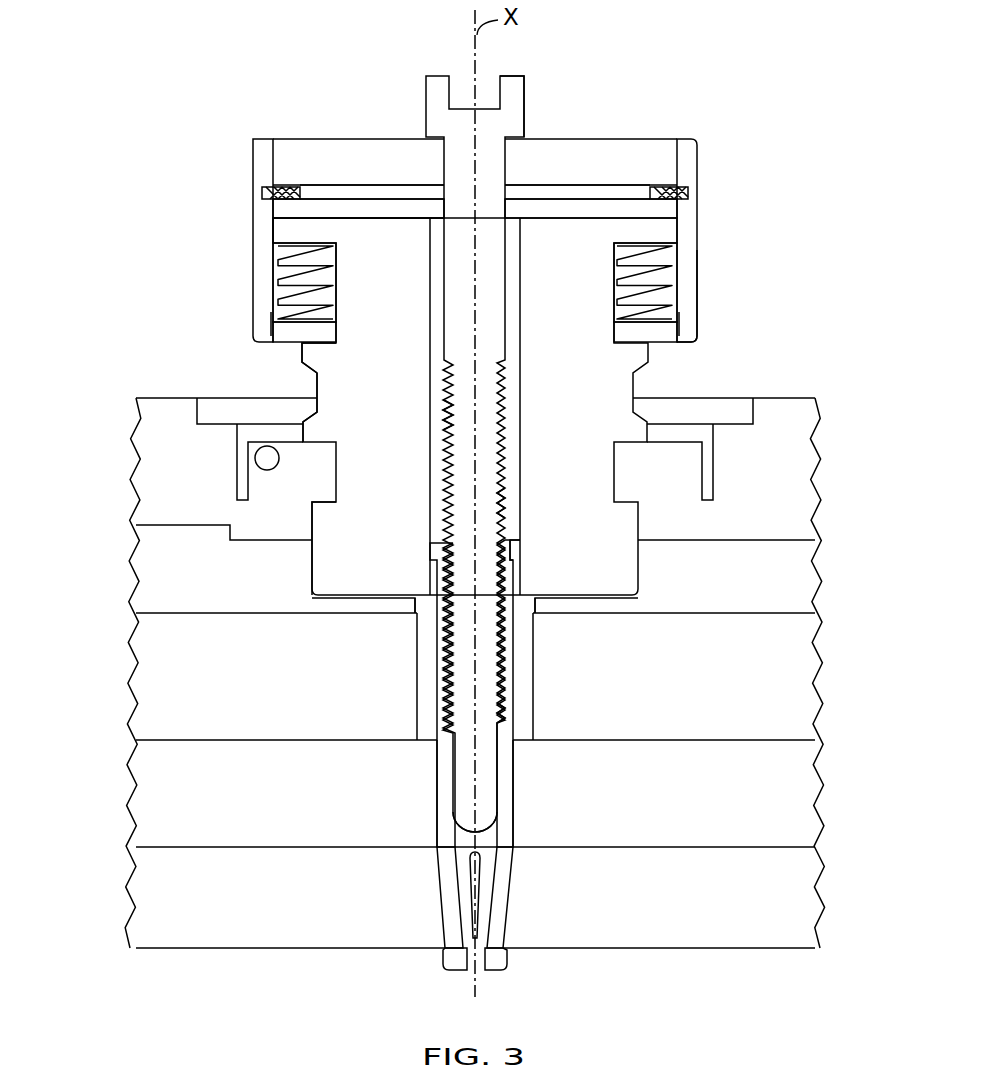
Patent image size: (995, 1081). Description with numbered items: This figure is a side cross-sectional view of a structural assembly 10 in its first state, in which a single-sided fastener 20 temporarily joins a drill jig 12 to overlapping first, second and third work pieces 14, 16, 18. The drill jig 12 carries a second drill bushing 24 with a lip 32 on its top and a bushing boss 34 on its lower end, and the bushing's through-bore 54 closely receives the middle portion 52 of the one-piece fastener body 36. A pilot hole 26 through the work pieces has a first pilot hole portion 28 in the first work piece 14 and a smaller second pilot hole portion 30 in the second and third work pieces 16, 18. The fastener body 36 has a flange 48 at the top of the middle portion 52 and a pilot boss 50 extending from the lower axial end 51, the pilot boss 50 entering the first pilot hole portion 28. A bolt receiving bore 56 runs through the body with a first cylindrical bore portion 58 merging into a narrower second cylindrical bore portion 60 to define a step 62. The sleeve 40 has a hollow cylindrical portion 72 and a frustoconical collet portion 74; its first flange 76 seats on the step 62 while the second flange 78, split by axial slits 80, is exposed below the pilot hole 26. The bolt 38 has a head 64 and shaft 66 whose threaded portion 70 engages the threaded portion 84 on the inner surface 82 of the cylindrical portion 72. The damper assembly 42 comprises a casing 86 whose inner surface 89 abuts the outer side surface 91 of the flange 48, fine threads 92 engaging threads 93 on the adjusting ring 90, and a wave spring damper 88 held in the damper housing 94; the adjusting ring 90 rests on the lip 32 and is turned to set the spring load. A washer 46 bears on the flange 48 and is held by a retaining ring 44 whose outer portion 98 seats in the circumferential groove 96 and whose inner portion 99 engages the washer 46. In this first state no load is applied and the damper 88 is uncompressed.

The structural assembly 10 is at (130, 65).
The drill jig 12 is at (766, 445).
The first work piece 14 is at (766, 680).
The second work piece 16 is at (766, 790).
The third work piece 18 is at (766, 890).
The single-sided fastener 20 is at (254, 140).
The second drill bushing 24 is at (640, 365).
The pilot hole 26 is at (420, 675).
The first pilot hole portion 28 is at (530, 660).
The second pilot hole portion 30 is at (437, 918).
The lip 32 is at (303, 348).
The bushing boss 34 is at (640, 565).
The fastener body 36 is at (360, 393).
The bolt 38 is at (440, 95).
The sleeve 40 is at (435, 823).
The damper assembly 42 is at (683, 252).
The retaining ring 44 is at (697, 197).
The washer 46 is at (340, 210).
The flange 48 is at (278, 238).
The pilot boss 50 is at (425, 622).
The lower axial end 51 is at (537, 597).
The middle portion 52 is at (658, 290).
The through-bore 54 is at (333, 478).
The bolt receiving bore 56 is at (442, 415).
The first cylindrical bore portion 58 is at (431, 450).
The second cylindrical bore portion 60 is at (514, 565).
The step 62 is at (436, 565).
The head 64 is at (521, 78).
The shaft 66 is at (445, 495).
The threaded portion 70 is at (512, 455).
The hollow cylindrical portion 72 is at (512, 772).
The hollow frustoconical collet portion 74 is at (507, 905).
The first flange 76 is at (513, 547).
The second flange 78 is at (448, 962).
The axial slits 80 is at (472, 872).
The inner surface 82 is at (488, 795).
The threaded portion 84 is at (495, 700).
The casing 86 is at (697, 143).
The damper 88 is at (282, 285).
The inner surface 89 is at (597, 158).
The adjusting ring 90 is at (280, 332).
The outer side surface 91 is at (272, 228).
The fine threads 92 is at (672, 342).
The threads 93 is at (684, 318).
The damper housing 94 is at (697, 340).
The circumferential groove 96 is at (262, 192).
The outer portion 98 is at (695, 193).
The inner portion 99 is at (663, 195).